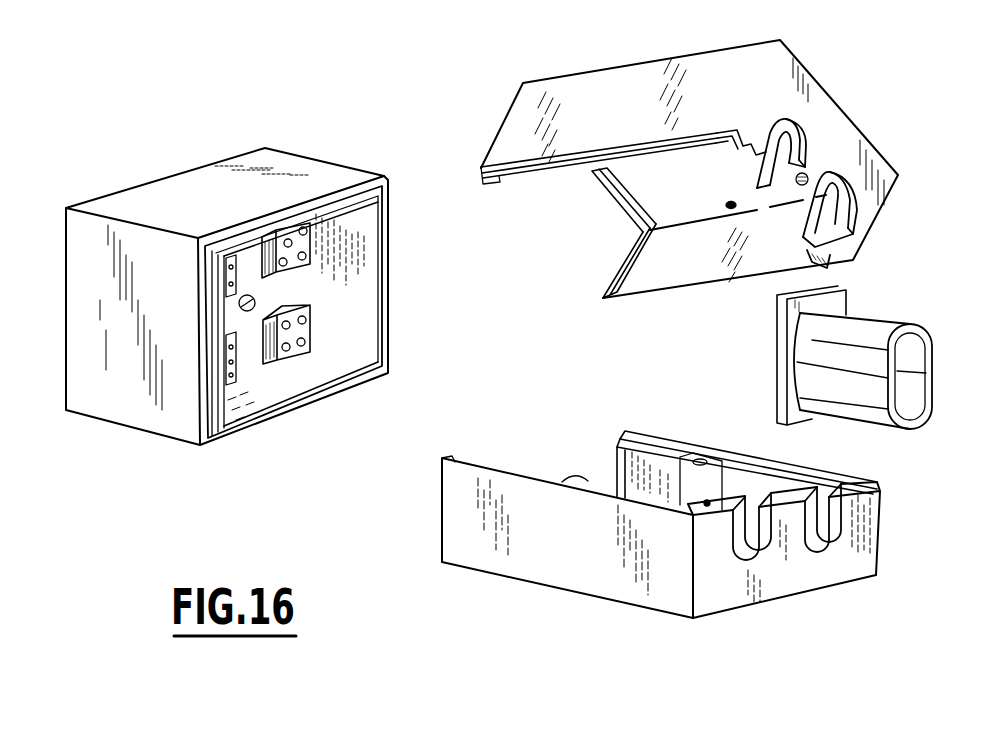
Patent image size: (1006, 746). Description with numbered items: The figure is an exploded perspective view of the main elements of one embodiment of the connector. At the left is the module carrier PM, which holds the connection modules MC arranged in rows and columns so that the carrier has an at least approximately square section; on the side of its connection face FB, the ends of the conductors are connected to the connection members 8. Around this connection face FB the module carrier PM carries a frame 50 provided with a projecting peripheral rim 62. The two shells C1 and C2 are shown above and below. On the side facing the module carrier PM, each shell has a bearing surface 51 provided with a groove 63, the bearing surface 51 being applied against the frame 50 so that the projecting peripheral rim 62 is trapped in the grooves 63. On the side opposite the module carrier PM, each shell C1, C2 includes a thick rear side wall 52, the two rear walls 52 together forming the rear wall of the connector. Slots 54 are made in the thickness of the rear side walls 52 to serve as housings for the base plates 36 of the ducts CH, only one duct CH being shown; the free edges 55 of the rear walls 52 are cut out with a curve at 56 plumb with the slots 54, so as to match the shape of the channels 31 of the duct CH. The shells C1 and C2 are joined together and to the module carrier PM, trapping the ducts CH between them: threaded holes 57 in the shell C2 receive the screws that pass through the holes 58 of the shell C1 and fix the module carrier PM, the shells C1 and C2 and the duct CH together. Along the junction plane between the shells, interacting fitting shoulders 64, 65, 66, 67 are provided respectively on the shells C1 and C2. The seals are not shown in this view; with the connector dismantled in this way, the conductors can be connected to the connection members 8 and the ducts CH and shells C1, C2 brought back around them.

The module carrier PM is at (138, 200).
The frame 50 is at (197, 438).
The projecting peripheral rim 62 is at (210, 313).
The connection face FB is at (276, 392).
The connection module MC is at (305, 240).
The connection member 8 is at (308, 320).
The shell C1 is at (522, 123).
The fitting shoulder 64 is at (557, 177).
The fitting shoulder 65 is at (480, 181).
The bearing surface 51 is at (600, 193).
The groove 63 is at (623, 217).
The hole 58 is at (731, 210).
The free edge 55 is at (723, 137).
The curved cut-out 56 is at (800, 127).
The slot 54 is at (827, 195).
The rear side wall 52 is at (840, 143).
The duct CH is at (858, 357).
The base plate 36 is at (792, 338).
The channel 31 is at (870, 327).
The shell C2 is at (500, 565).
The threaded hole 57 is at (578, 479).
The fitting shoulder 66 is at (660, 430).
The fitting shoulder 67 is at (738, 462).